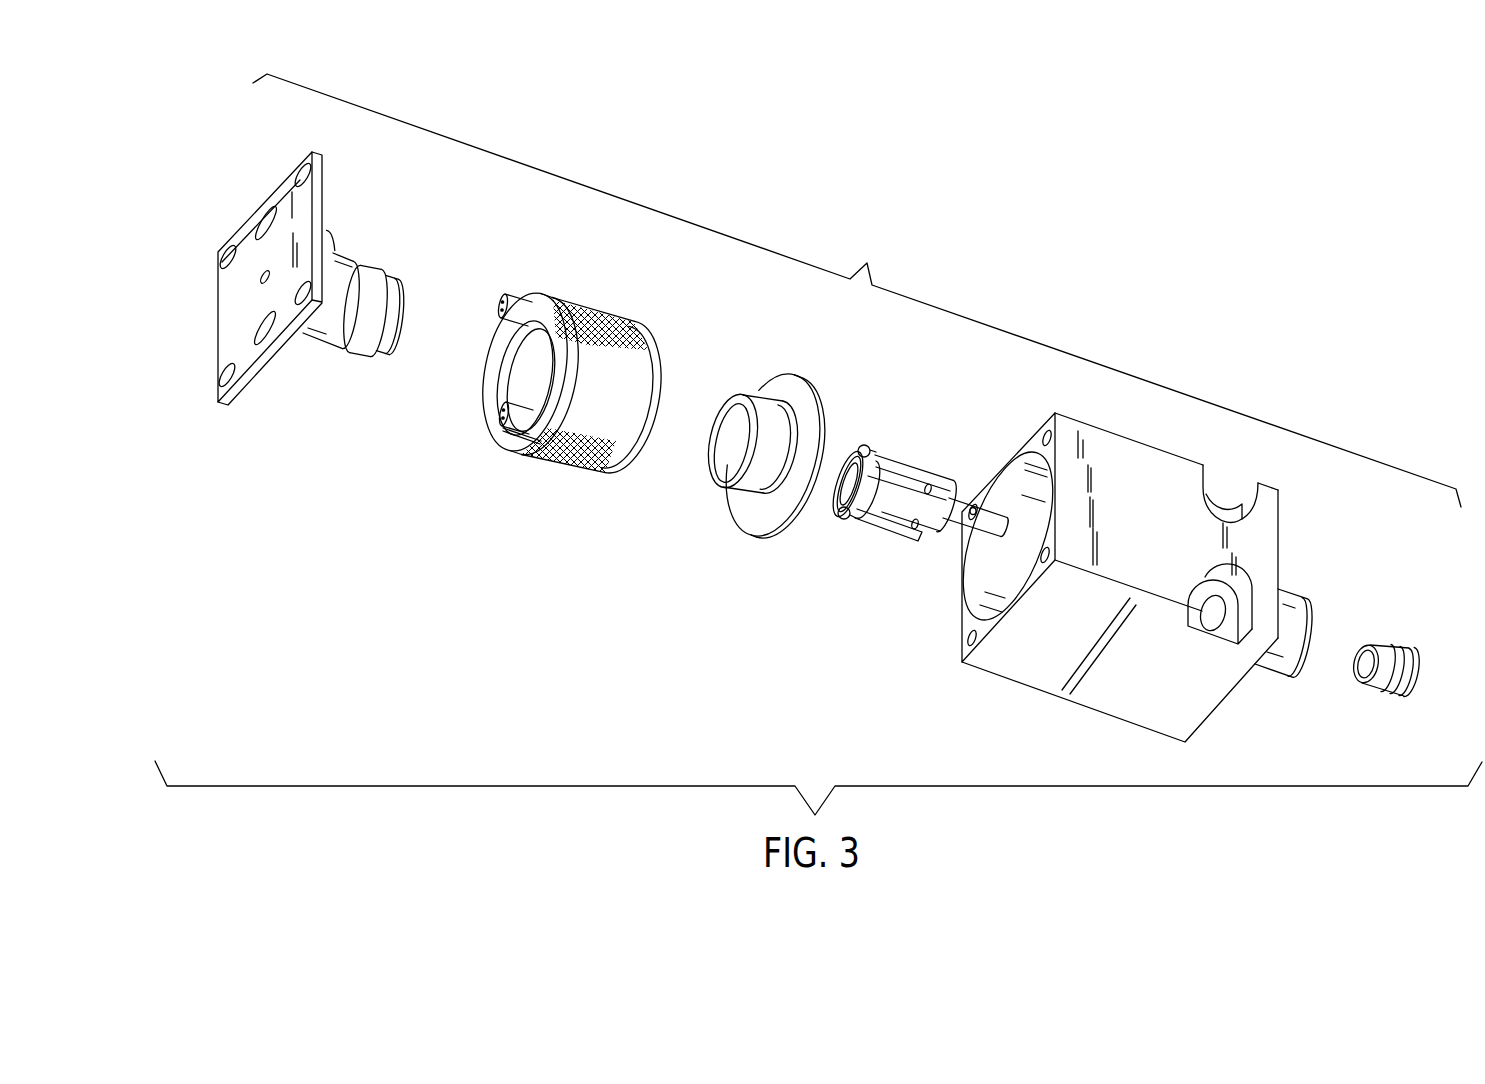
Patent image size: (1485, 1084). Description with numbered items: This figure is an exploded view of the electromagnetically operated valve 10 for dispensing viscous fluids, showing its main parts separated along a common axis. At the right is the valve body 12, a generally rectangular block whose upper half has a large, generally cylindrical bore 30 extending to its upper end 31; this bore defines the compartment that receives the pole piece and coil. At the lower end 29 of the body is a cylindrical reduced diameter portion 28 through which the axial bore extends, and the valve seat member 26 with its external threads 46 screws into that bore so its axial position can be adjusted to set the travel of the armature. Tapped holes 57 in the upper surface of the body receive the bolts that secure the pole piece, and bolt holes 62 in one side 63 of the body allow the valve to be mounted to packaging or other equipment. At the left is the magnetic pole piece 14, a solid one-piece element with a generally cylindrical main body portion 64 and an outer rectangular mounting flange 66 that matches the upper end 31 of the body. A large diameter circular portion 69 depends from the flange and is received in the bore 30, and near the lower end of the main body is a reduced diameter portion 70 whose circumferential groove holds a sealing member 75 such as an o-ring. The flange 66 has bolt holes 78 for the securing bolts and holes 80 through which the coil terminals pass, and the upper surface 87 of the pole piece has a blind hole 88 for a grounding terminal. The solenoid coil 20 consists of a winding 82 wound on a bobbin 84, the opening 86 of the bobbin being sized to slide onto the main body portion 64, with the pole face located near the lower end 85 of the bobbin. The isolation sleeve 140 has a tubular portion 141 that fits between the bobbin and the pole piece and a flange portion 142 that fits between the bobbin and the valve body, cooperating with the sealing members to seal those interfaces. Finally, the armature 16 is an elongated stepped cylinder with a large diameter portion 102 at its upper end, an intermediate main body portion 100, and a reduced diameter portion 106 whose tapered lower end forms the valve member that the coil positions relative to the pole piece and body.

The electromagnetically operated valve 10 is at (868, 264).
The valve body 12 is at (1126, 563).
The magnetic pole piece 14 is at (308, 267).
The armature 16 is at (917, 500).
The solenoid coil 20 is at (579, 366).
The valve seat member 26 is at (1384, 671).
The reduced diameter portion 28 is at (1290, 594).
The lower end 29 is at (1278, 503).
The bore 30 is at (1017, 475).
The upper end 31 is at (1026, 430).
The threads 46 is at (1392, 690).
The tapped holes 57 is at (1043, 574).
The bolt holes 62 is at (1222, 501).
The side 63 is at (1190, 463).
The main body portion 64 is at (312, 330).
The mounting flange 66 is at (246, 221).
The circular portion 69 is at (331, 222).
The reduced diameter portion 70 is at (362, 266).
The sealing member 75 is at (385, 268).
The bolt holes 78 is at (303, 163).
The holes 80 is at (265, 206).
The winding 82 is at (600, 320).
The bobbin 84 is at (545, 295).
The lower end 85 is at (662, 346).
The opening 86 is at (523, 377).
The upper surface 87 is at (228, 325).
The blind hole 88 is at (261, 279).
The main body portion 100 is at (902, 468).
The large diameter portion 102 is at (869, 453).
The reduced diameter portion 106 is at (957, 508).
The isolation sleeve 140 is at (757, 433).
The tubular portion 141 is at (758, 402).
The flange portion 142 is at (798, 382).